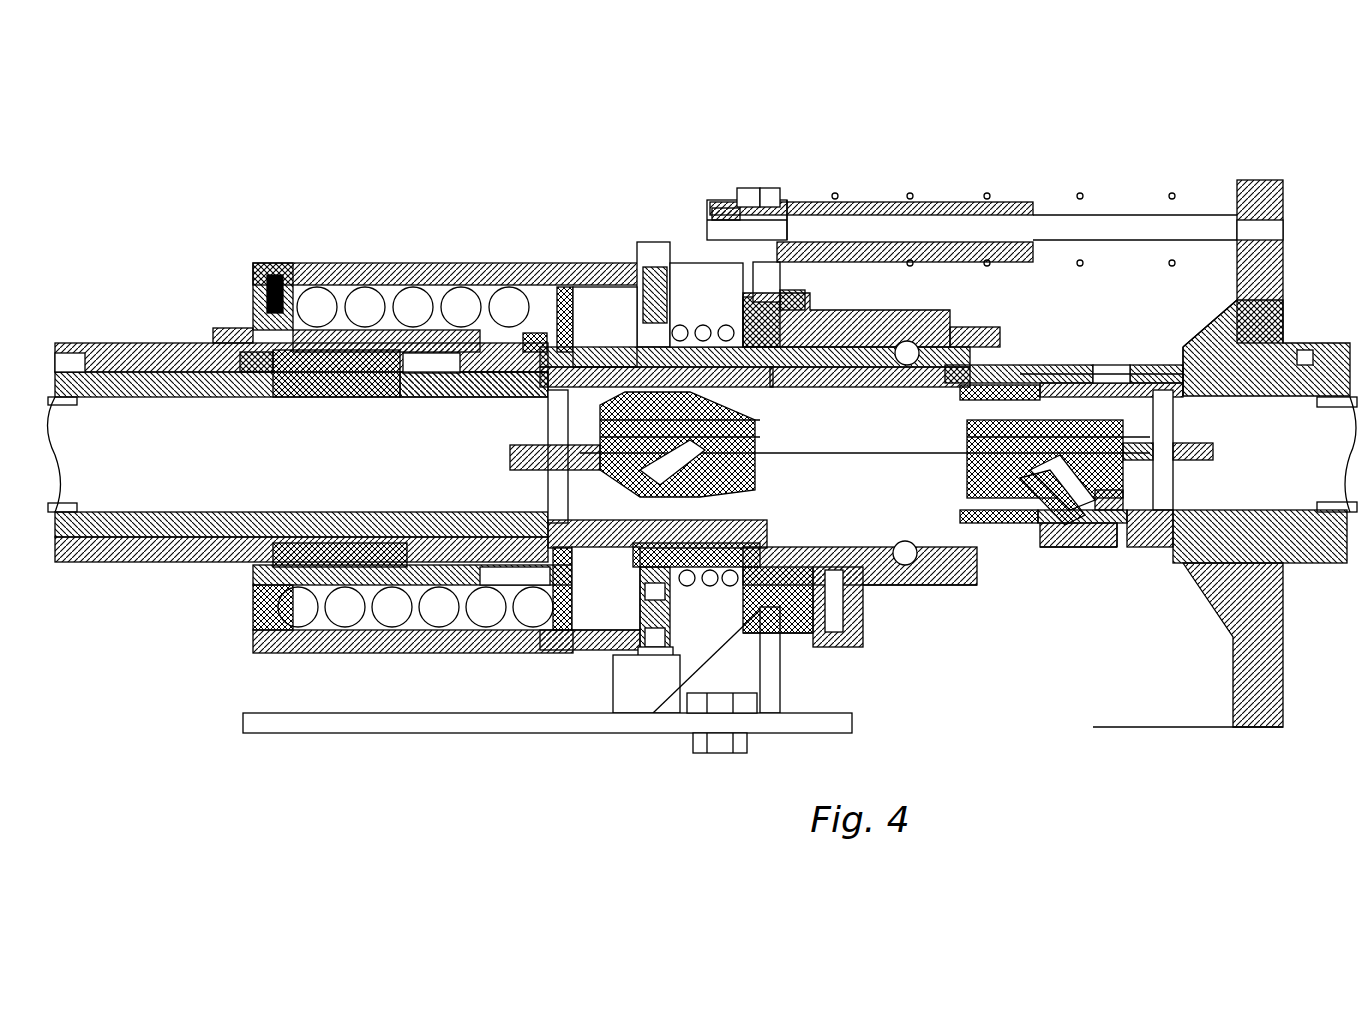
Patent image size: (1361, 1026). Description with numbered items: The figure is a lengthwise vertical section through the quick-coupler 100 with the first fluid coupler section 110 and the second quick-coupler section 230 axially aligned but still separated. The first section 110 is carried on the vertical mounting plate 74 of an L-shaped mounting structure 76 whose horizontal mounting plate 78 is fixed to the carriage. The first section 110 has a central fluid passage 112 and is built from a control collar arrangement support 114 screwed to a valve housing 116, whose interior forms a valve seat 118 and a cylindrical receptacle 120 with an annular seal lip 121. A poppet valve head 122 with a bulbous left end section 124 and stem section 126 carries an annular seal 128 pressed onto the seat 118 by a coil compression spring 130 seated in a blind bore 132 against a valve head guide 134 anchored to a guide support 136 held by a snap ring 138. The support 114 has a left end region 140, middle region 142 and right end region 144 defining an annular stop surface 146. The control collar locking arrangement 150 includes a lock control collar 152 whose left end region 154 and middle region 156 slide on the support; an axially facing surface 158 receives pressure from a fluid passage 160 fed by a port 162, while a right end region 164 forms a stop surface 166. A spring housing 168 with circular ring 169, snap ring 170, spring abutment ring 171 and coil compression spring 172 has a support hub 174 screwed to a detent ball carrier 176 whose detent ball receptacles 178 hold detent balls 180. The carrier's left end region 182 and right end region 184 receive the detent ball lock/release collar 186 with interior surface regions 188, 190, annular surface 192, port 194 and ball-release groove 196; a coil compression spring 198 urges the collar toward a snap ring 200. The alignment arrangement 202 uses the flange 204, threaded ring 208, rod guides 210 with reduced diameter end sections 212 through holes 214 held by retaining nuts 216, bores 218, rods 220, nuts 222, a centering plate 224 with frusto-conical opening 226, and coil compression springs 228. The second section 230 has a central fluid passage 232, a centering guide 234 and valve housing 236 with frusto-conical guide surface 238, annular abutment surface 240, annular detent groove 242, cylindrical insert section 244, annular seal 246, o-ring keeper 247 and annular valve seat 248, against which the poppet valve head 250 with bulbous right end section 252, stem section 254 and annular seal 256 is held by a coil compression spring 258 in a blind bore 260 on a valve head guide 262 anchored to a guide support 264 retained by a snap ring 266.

The vertical mounting plate 74 is at (785, 640).
The L-shaped mounting structure 76 is at (664, 755).
The horizontal mounting plate 78 is at (855, 727).
The quick-coupler 100 is at (756, 140).
The first fluid coupler section 110 is at (930, 655).
The central fluid passage 112 is at (225, 474).
The control collar arrangement support 114 is at (115, 586).
The valve housing 116 is at (630, 563).
The valve seat 118 is at (650, 385).
The cylindrical receptacle 120 is at (740, 372).
The annular seal lip 121 is at (803, 505).
The poppet valve head 122 is at (613, 410).
The bulbous left end section 124 is at (617, 547).
The stem section 126 is at (720, 400).
The annular seal 128 is at (705, 510).
The coil compression spring 130 is at (705, 478).
The blind bore 132 is at (700, 435).
The valve head guide 134 is at (520, 460).
The guide support 136 is at (546, 497).
The snap ring 138 is at (553, 393).
The left end region 140 is at (170, 563).
The middle region 142 is at (280, 553).
The right end region 144 is at (400, 545).
The annular stop surface 146 is at (420, 530).
The control collar locking arrangement 150 is at (331, 212).
The lock control collar 152 is at (240, 606).
The left end region 154 is at (280, 353).
The middle region 156 is at (420, 372).
The axially facing surface 158 is at (322, 340).
The fluid passage 160 is at (121, 372).
The port 162 is at (76, 356).
The right end region 164 is at (427, 397).
The annular stop surface 166 is at (453, 557).
The spring housing 168 is at (405, 263).
The circular ring 169 is at (253, 275).
The snap ring 170 is at (250, 295).
The spring abutment ring 171 is at (565, 263).
The coil compression spring 172 is at (470, 263).
The support hub 174 is at (640, 330).
The detent ball carrier 176 is at (960, 345).
The detent ball receptacles 178 is at (955, 335).
The detent ball 180 is at (912, 362).
The left end region 182 is at (720, 325).
The right end region 184 is at (870, 340).
The detent ball lock/release collar 186 is at (885, 312).
The interior surface region 188 is at (800, 385).
The interior surface region 190 is at (890, 395).
The annular surface 192 is at (895, 395).
The port 194 is at (845, 625).
The ball-release groove 196 is at (900, 565).
The coil compression spring 198 is at (640, 250).
The snap ring 200 is at (1040, 385).
The valve coupler section alignment arrangement 202 is at (1112, 155).
The flange 204 is at (730, 285).
The threaded ring 208 is at (795, 300).
The rod guides 210 is at (920, 200).
The reduced diameter end sections 212 is at (740, 205).
The holes 214 is at (800, 210).
The retaining nut 216 is at (760, 195).
The bore 218 is at (1010, 215).
The rod 220 is at (1130, 245).
The nut 222 is at (700, 210).
The centering plate 224 is at (1258, 180).
The frusto-conical opening 226 is at (1290, 330).
The coil compression spring 228 is at (1168, 195).
The second quick-coupler section 230 is at (1172, 652).
The central fluid passage 232 is at (1322, 476).
The centering guide 234 is at (1319, 583).
The valve housing 236 is at (1119, 552).
The frusto-conical guide surface 238 is at (1215, 320).
The annular abutment surface 240 is at (1185, 355).
The annular detent groove 242 is at (1115, 370).
The cylindrical insert section 244 is at (995, 375).
The annular seal 246 is at (1048, 540).
The o-ring keeper 247 is at (1091, 561).
The annular valve seat 248 is at (1068, 365).
The poppet valve head 250 is at (1173, 425).
The bulbous right end section 252 is at (1120, 560).
The stem section 254 is at (960, 485).
The annular seal 256 is at (1043, 500).
The coil compression spring 258 is at (965, 460).
The blind bore 260 is at (965, 425).
The valve head guide 262 is at (1195, 470).
The guide support 264 is at (1190, 445).
The snap ring 266 is at (1137, 500).